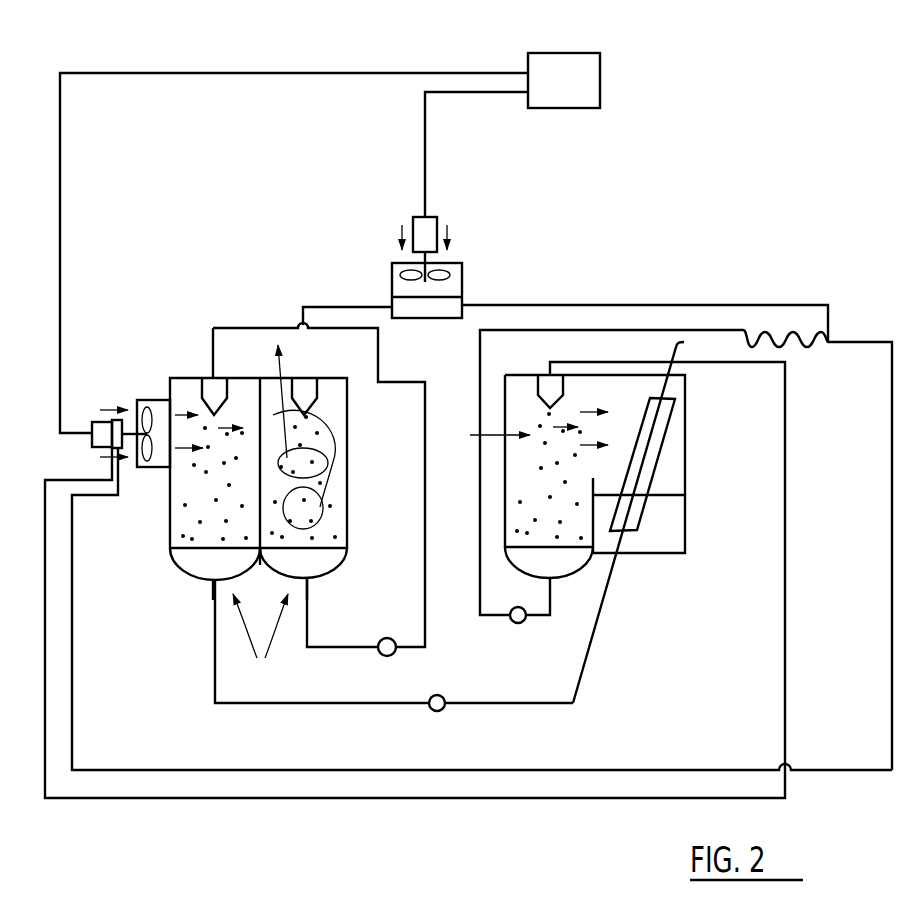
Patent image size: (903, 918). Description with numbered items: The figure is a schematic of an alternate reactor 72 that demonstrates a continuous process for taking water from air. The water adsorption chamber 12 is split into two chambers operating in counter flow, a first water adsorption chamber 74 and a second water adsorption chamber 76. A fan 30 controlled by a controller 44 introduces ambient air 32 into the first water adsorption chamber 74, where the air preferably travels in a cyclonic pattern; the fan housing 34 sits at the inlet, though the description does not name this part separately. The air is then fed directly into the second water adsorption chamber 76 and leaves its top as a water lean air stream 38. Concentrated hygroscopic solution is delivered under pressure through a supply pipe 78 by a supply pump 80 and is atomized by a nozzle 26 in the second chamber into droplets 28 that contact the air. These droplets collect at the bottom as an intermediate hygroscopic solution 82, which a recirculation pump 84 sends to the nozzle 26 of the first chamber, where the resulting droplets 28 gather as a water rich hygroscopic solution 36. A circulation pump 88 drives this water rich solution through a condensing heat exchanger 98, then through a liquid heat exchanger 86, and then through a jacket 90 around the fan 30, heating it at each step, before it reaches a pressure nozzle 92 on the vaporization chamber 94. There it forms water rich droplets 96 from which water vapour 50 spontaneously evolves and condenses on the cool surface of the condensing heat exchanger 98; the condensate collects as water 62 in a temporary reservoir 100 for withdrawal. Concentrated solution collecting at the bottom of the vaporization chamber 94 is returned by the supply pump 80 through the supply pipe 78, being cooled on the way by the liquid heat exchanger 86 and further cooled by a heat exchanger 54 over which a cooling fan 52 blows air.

The water adsorption chamber 12 is at (260, 643).
The nozzle 26 is at (220, 390).
The droplets 28 is at (175, 502).
The fan 30 is at (98, 420).
The ambient air 32 is at (105, 408).
The blower housing 34 is at (157, 400).
The water rich hygroscopic solution 36 is at (180, 562).
The water lean air stream 38 is at (277, 367).
The controller 44 is at (590, 78).
The water vapour 50 is at (600, 398).
The cooling fan 52 is at (437, 227).
The heat exchanger 54 is at (462, 298).
The water 62 is at (685, 522).
The alternate reactor 72 is at (512, 740).
The first water adsorption chamber 74 is at (195, 580).
The second water adsorption chamber 76 is at (325, 580).
The supply pipe 78 is at (340, 305).
The supply pump 80 is at (518, 623).
The intermediate hygroscopic solution 82 is at (333, 562).
The recirculation pump 84 is at (383, 656).
The liquid heat exchanger 86 is at (780, 330).
The circulation pump 88 is at (430, 712).
The jacket 90 is at (140, 407).
The pressure nozzle 92 is at (558, 388).
The vaporization chamber 94 is at (523, 375).
The water rich droplets 96 is at (521, 476).
The condensing heat exchanger 98 is at (650, 448).
The temporary reservoir 100 is at (660, 545).